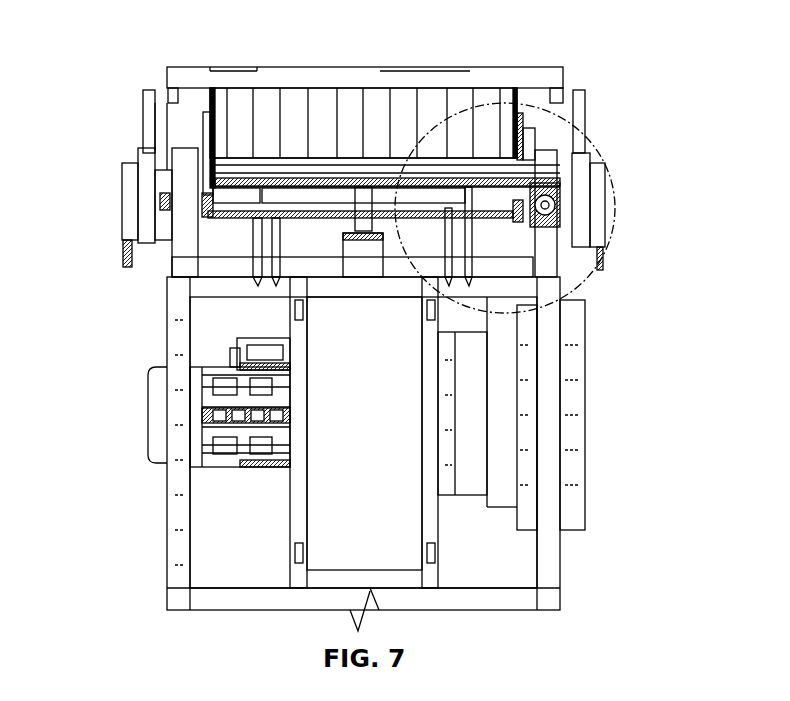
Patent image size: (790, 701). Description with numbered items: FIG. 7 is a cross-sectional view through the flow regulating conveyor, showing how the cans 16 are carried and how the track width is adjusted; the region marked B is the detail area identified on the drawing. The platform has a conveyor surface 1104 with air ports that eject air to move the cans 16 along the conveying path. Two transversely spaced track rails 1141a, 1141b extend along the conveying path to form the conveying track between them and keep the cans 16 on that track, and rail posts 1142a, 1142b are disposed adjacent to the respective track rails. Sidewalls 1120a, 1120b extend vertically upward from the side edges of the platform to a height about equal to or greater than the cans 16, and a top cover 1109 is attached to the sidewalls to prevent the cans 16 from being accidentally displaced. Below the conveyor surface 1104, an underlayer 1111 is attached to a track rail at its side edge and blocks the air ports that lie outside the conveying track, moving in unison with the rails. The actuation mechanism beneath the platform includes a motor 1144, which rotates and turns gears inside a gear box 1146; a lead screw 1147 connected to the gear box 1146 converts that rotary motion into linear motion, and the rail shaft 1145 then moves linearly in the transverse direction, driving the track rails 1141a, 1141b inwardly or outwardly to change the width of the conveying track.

The cans 16 is at (318, 107).
The detail region B is at (468, 110).
The top cover 1109 is at (533, 67).
The track rail 1141a is at (523, 117).
The rail post 1142a is at (527, 143).
The sidewall 1120a is at (578, 150).
The conveyor surface 1104 is at (522, 160).
The underlayer 1111 is at (527, 165).
The gear box 1146 is at (470, 212).
The motor 1144 is at (372, 224).
The track rail 1141b is at (203, 147).
The sidewall 1120b is at (143, 120).
The rail post 1142b is at (213, 165).
The rail shaft 1145 is at (232, 207).
The lead screw 1147 is at (215, 222).